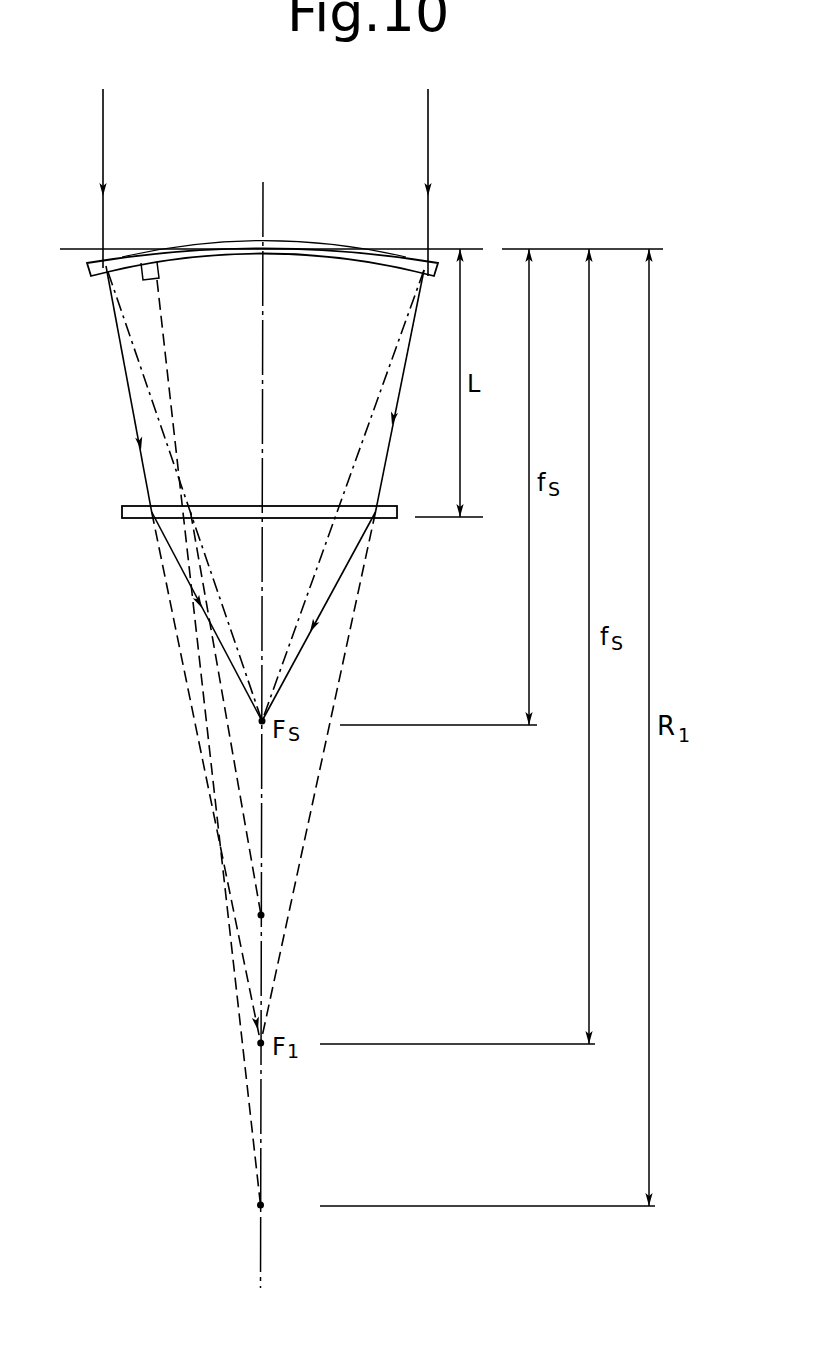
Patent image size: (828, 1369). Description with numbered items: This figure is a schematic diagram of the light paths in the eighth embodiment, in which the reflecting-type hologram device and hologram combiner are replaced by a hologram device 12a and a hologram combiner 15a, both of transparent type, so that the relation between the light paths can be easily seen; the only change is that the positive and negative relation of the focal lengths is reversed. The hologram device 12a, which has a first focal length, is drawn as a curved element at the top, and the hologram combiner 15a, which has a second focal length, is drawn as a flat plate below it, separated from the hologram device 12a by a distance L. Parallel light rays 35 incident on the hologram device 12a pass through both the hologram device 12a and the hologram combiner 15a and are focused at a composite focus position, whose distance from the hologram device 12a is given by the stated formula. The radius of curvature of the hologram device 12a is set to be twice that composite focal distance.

The hologram device 12a is at (210, 241).
The hologram combiner 15a is at (302, 505).
The parallel light rays 35 is at (430, 158).